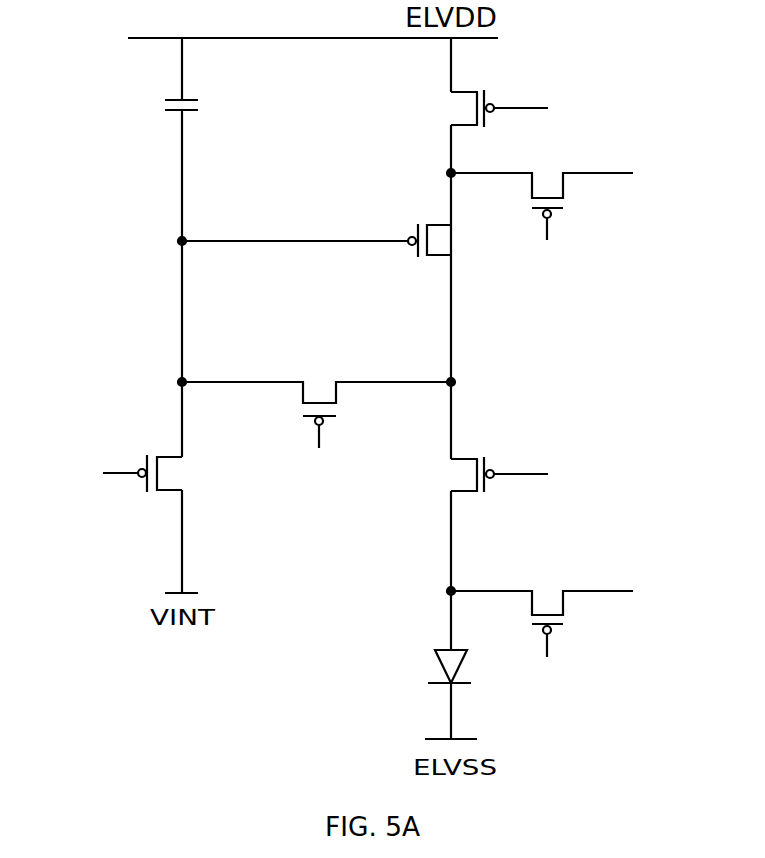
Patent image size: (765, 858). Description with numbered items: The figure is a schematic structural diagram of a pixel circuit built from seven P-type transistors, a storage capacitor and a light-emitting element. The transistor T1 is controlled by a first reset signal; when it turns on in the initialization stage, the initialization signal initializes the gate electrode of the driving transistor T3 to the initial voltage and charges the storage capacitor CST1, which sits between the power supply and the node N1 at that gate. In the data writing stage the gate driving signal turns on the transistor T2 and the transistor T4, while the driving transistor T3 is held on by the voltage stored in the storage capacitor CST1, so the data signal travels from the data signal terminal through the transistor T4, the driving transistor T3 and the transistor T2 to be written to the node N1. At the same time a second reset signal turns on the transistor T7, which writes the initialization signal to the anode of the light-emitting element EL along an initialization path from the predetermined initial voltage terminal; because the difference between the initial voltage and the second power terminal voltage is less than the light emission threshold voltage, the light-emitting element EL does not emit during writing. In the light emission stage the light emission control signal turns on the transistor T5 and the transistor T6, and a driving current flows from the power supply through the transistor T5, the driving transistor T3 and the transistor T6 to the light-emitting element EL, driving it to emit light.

The storage capacitor CST1 is at (221, 108).
The node N1 is at (293, 229).
The transistor T1 is at (141, 462).
The transistor T2 is at (316, 422).
The driving transistor T3 is at (454, 240).
The transistor T4 is at (570, 213).
The transistor T5 is at (503, 108).
The transistor T6 is at (506, 474).
The transistor T7 is at (570, 614).
The light-emitting element EL is at (470, 666).